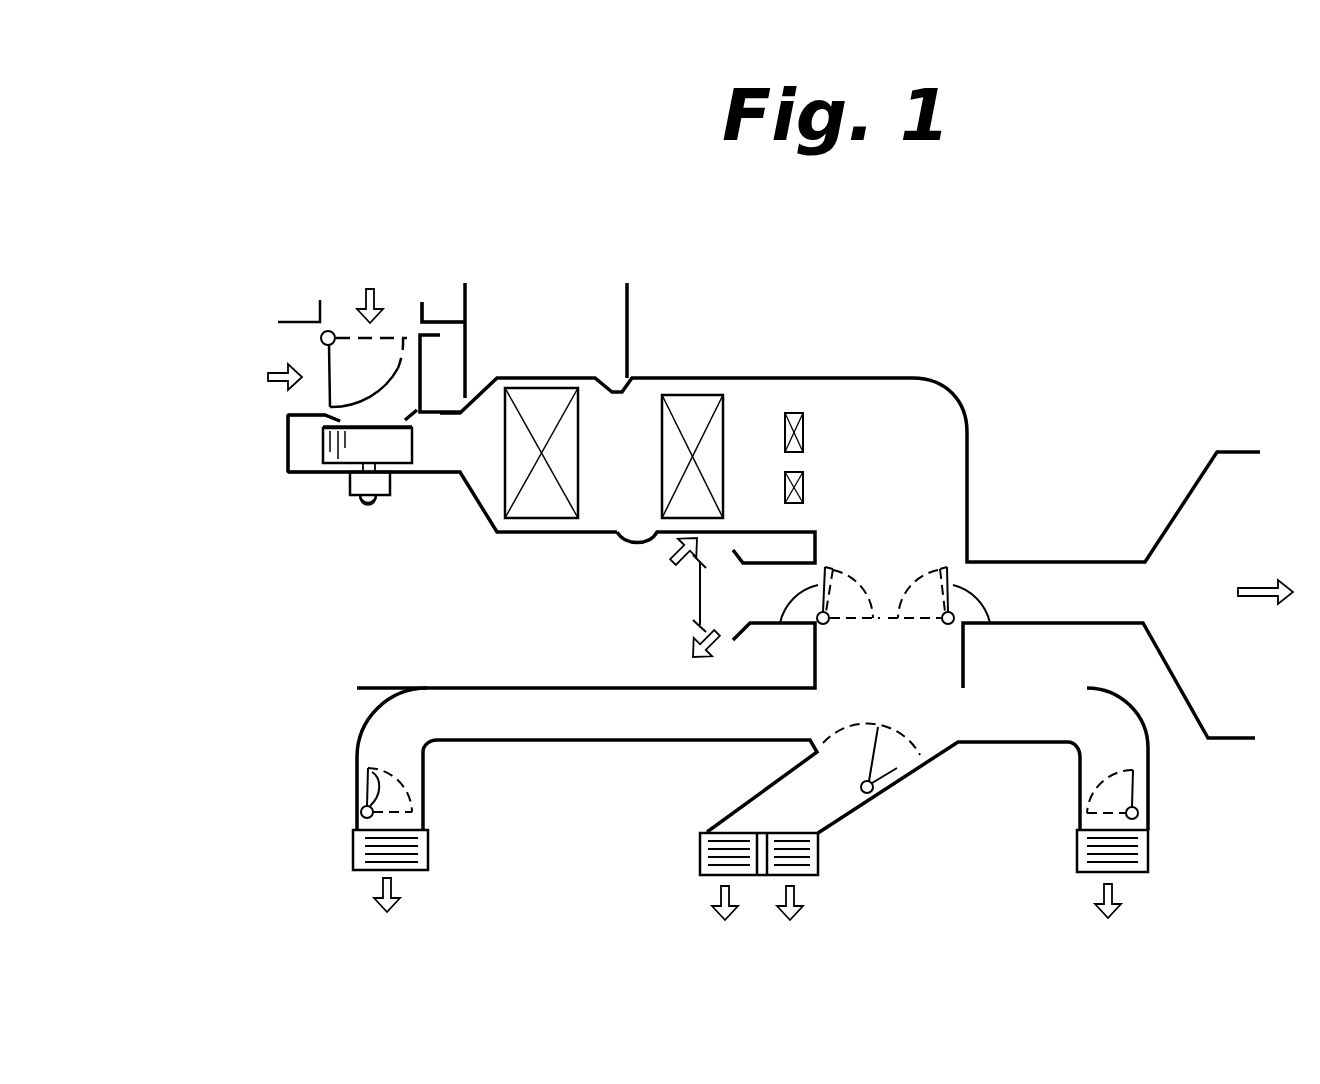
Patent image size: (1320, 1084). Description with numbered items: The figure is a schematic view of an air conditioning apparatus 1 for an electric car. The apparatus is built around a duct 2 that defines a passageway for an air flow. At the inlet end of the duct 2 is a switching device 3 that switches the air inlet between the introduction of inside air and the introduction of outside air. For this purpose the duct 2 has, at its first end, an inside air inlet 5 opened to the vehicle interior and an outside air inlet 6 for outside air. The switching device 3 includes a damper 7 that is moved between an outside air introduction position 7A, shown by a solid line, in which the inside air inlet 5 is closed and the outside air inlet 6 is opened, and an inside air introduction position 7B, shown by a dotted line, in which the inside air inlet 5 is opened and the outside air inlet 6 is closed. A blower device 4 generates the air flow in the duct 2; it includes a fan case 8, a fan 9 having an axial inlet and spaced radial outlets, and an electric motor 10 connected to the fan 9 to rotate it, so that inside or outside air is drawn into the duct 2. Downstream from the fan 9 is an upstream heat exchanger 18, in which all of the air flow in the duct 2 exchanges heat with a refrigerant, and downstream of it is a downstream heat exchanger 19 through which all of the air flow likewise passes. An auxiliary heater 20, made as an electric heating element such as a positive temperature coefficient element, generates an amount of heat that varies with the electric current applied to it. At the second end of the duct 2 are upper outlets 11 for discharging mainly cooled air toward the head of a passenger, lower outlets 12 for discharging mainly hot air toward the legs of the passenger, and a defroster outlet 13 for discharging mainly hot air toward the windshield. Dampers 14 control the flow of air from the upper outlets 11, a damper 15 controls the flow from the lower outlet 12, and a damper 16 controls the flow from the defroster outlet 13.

The air conditioning apparatus 1 is at (856, 360).
The duct 2 is at (930, 378).
The switching device 3 is at (300, 300).
The blower device 4 is at (352, 512).
The inside air inlet 5 is at (319, 338).
The outside air inlet 6 is at (412, 312).
The damper 7 is at (327, 386).
The outside air introduction position 7A is at (320, 359).
The inside air introduction position 7B is at (344, 328).
The fan case 8 is at (287, 426).
The fan 9 is at (323, 447).
The electric motor 10 is at (353, 487).
The upper outlets 11 is at (355, 850).
The lower outlets 12 is at (697, 565).
The defroster outlet 13 is at (1195, 517).
The dampers 14 is at (368, 773).
The damper 15 is at (785, 625).
The damper 16 is at (990, 625).
The upstream heat exchanger 18 is at (505, 487).
The downstream heat exchanger 19 is at (735, 393).
The auxiliary heater 20 is at (803, 470).